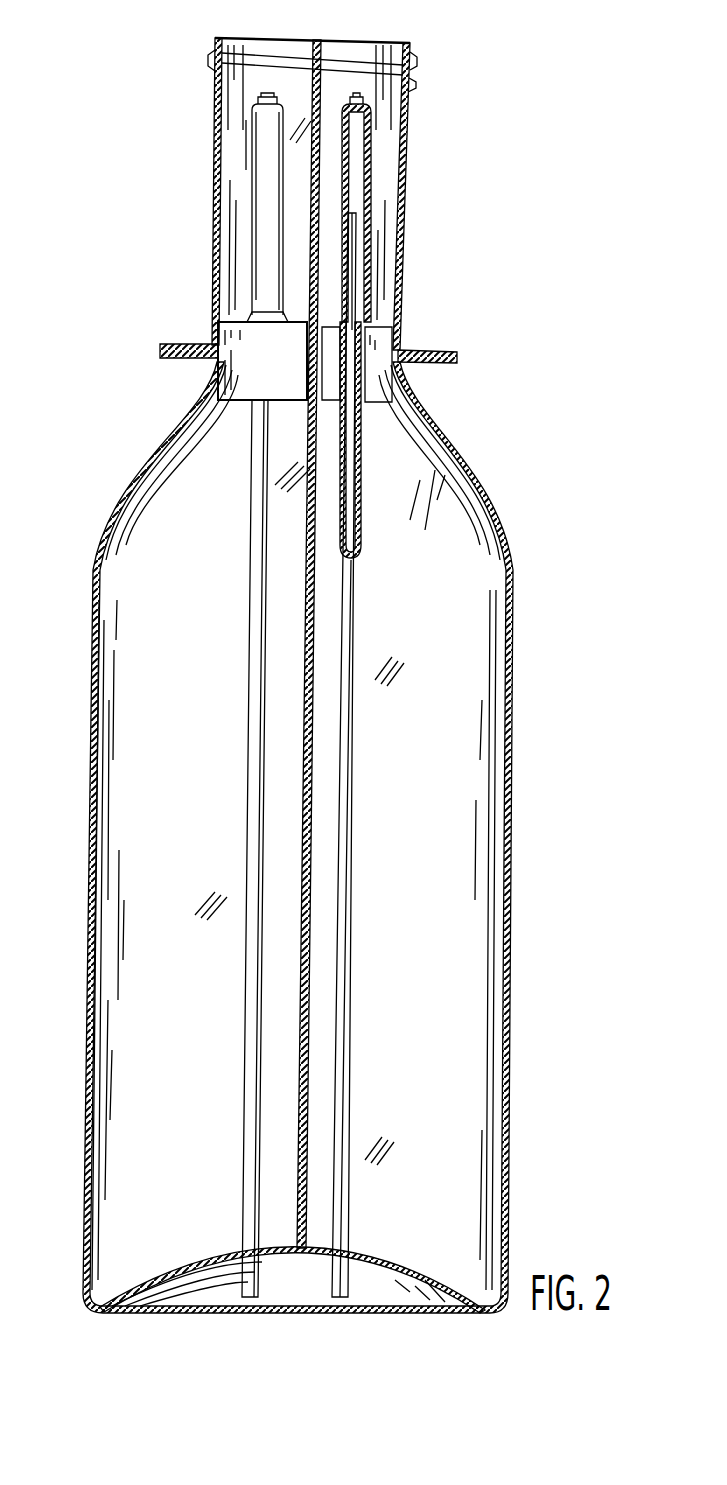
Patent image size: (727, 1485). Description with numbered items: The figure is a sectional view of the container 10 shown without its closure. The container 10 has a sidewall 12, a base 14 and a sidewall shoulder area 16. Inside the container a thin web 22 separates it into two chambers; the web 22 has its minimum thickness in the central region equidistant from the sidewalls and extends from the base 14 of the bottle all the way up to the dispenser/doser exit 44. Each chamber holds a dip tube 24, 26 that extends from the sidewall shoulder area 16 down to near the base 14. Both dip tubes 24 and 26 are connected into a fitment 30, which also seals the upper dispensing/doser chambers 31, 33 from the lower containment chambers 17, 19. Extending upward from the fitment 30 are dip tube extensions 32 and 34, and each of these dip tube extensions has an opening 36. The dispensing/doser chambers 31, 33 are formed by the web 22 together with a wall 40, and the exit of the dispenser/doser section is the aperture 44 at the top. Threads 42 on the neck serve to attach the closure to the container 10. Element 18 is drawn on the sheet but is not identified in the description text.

The container 10 is at (490, 475).
The sidewall 12 is at (512, 731).
The base 14 is at (425, 1290).
The sidewall shoulder area 16 is at (417, 380).
The lower containment chamber 17 is at (425, 960).
The neck flange 18 is at (445, 350).
The lower containment chamber 19 is at (137, 1077).
The web 22 is at (308, 455).
The dip tube 24 is at (247, 863).
The dip tube 26 is at (355, 826).
The fitment 30 is at (232, 375).
The dispensing/doser chamber 31 is at (385, 240).
The dip tube extension 32 is at (258, 270).
The dispensing/doser chamber 33 is at (240, 206).
The dip tube extension 34 is at (355, 198).
The opening 36 is at (255, 100).
The wall 40 is at (410, 152).
The threads 42 is at (410, 75).
The aperture 44 is at (345, 42).